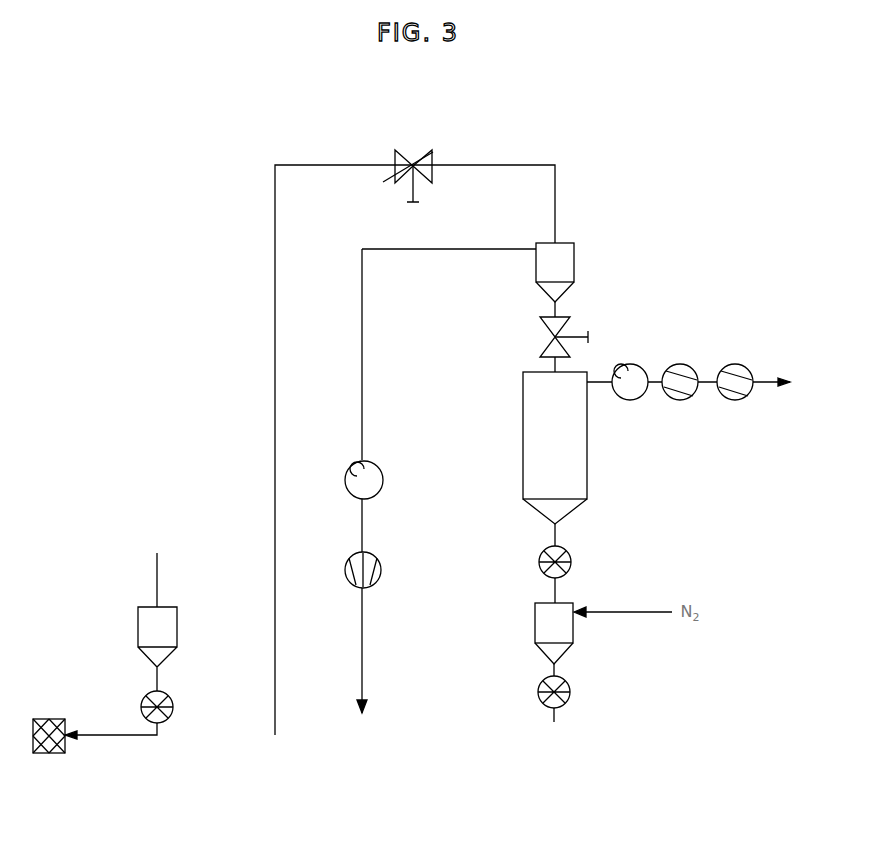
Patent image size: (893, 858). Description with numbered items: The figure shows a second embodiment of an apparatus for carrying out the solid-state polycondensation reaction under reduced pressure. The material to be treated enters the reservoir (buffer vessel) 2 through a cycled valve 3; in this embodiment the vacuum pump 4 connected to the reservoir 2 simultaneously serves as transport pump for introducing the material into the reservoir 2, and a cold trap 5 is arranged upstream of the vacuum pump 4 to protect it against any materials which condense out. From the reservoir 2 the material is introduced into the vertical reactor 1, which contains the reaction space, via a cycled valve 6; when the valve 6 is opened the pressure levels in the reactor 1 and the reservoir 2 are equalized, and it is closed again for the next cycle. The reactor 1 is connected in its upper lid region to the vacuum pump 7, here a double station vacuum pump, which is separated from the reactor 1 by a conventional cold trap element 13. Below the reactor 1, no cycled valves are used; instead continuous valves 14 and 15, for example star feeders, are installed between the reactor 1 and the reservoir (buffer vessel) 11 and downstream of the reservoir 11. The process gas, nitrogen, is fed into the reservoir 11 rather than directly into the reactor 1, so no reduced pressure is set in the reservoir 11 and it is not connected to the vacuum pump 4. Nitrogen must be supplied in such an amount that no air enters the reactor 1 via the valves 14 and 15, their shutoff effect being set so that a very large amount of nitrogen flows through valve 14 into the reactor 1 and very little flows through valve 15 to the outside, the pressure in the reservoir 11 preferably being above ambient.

The vertical reactor 1 is at (577, 449).
The reservoir (buffer vessel) 2 is at (555, 262).
The cycled valve 3 is at (396, 180).
The vacuum pump 4 is at (355, 577).
The cold trap 5 is at (357, 483).
The cycled valve 6 is at (552, 323).
The vacuum pump 7 is at (707, 373).
The reservoir (buffer vessel) 11 is at (557, 628).
The cold trap element 13 is at (642, 368).
The continuous valve 14 is at (571, 562).
The continuous valve 15 is at (565, 687).